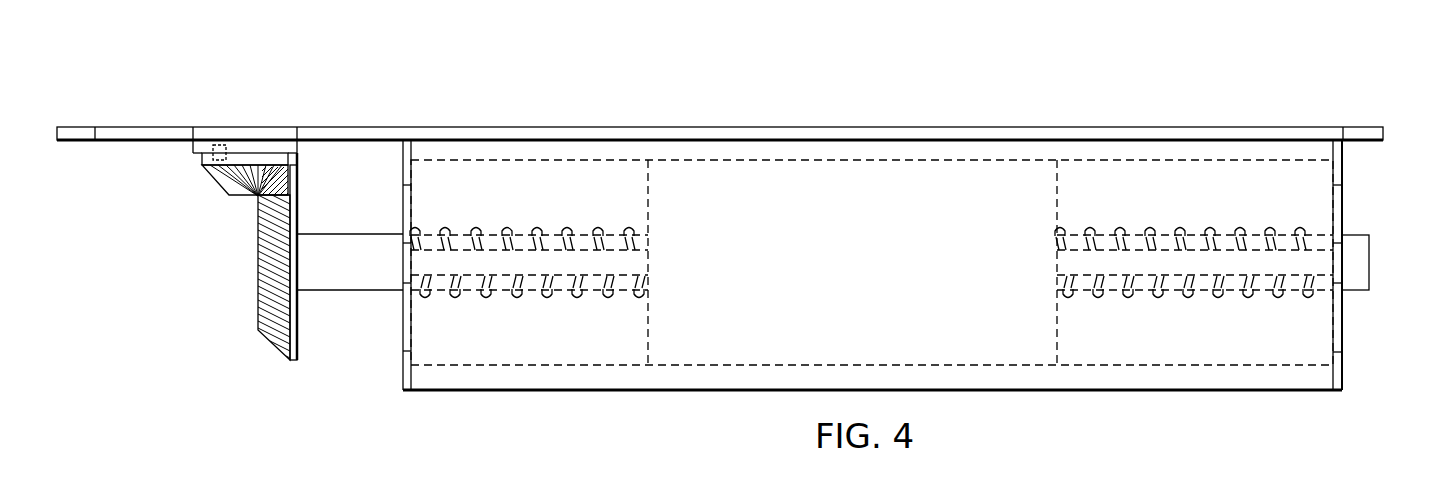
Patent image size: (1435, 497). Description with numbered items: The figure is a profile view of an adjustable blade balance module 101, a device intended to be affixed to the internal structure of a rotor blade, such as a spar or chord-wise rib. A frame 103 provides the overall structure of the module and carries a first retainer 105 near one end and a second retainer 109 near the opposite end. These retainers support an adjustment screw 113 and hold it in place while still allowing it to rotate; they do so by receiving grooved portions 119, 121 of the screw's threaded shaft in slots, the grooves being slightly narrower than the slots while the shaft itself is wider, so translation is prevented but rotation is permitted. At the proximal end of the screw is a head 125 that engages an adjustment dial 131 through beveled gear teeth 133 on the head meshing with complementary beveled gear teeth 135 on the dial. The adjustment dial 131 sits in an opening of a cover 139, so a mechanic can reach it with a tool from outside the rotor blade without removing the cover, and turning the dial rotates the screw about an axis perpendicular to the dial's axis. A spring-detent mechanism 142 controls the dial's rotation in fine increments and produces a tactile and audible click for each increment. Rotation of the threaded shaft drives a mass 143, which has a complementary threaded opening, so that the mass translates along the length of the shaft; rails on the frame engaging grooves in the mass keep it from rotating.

The adjustable blade balance module 101 is at (990, 104).
The frame 103 is at (1135, 392).
The first retainer 105 is at (403, 370).
The second retainer 109 is at (1343, 205).
The adjustment screw 113 is at (352, 226).
The grooved portion 119 is at (403, 272).
The grooved portion 121 is at (1333, 282).
The head 125 is at (300, 318).
The adjustment dial 131 is at (201, 159).
The beveled gear teeth 133 is at (258, 300).
The beveled gear teeth 135 is at (223, 183).
The cover 139 is at (147, 127).
The spring-detent mechanism 142 is at (218, 143).
The mass 143 is at (648, 203).